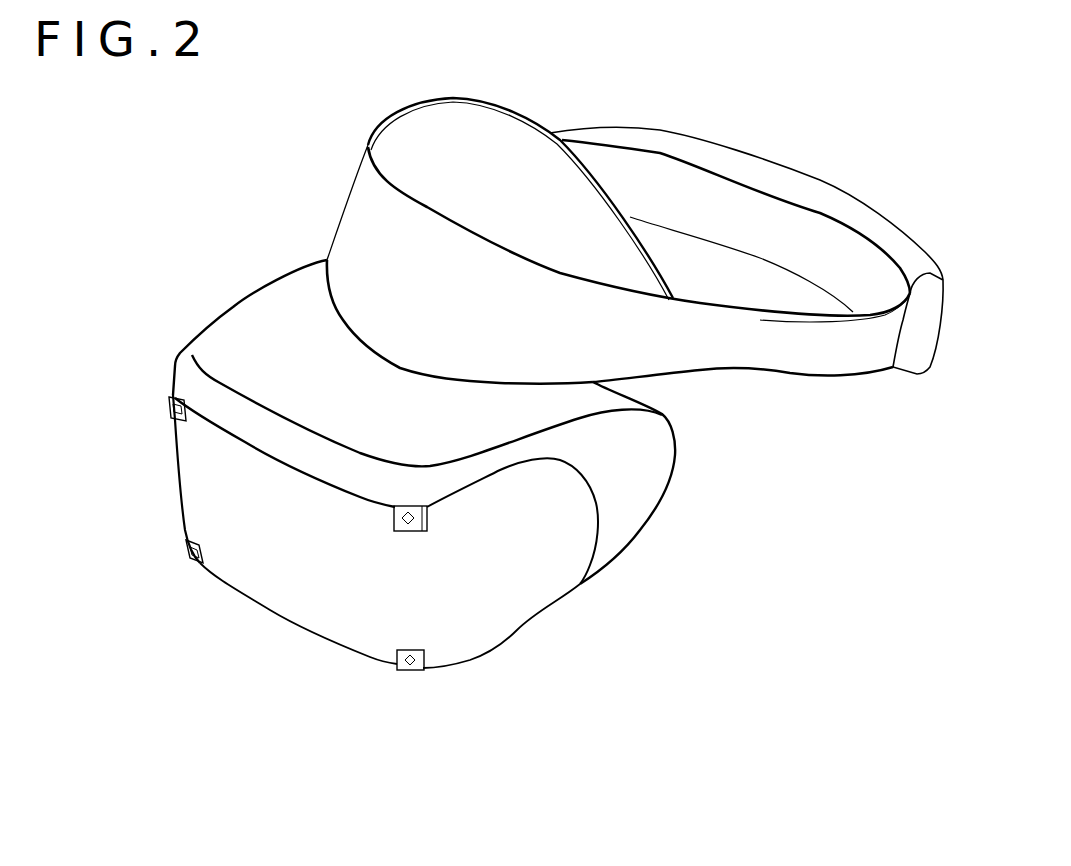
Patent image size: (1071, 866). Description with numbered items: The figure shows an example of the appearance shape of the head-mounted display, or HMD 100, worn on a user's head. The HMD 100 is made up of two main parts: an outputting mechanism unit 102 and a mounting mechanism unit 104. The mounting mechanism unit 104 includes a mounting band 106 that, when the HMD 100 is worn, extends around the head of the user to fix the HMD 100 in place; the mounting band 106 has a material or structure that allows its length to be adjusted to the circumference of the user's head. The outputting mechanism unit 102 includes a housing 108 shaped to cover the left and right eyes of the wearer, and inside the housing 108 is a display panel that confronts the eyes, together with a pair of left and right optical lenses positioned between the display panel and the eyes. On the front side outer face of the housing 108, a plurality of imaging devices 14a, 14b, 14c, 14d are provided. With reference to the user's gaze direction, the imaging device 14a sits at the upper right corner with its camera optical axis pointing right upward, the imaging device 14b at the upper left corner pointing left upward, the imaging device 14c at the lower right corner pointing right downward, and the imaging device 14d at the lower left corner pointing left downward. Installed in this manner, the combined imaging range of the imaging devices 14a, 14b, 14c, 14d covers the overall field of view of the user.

The head-mounted display (HMD) 100 is at (512, 841).
The outputting mechanism unit 102 is at (352, 469).
The mounting mechanism unit 104 is at (635, 271).
The mounting band 106 is at (805, 375).
The housing 108 is at (567, 603).
The imaging device 14a is at (172, 403).
The imaging device 14b is at (402, 506).
The imaging device 14c is at (188, 548).
The imaging device 14d is at (398, 669).